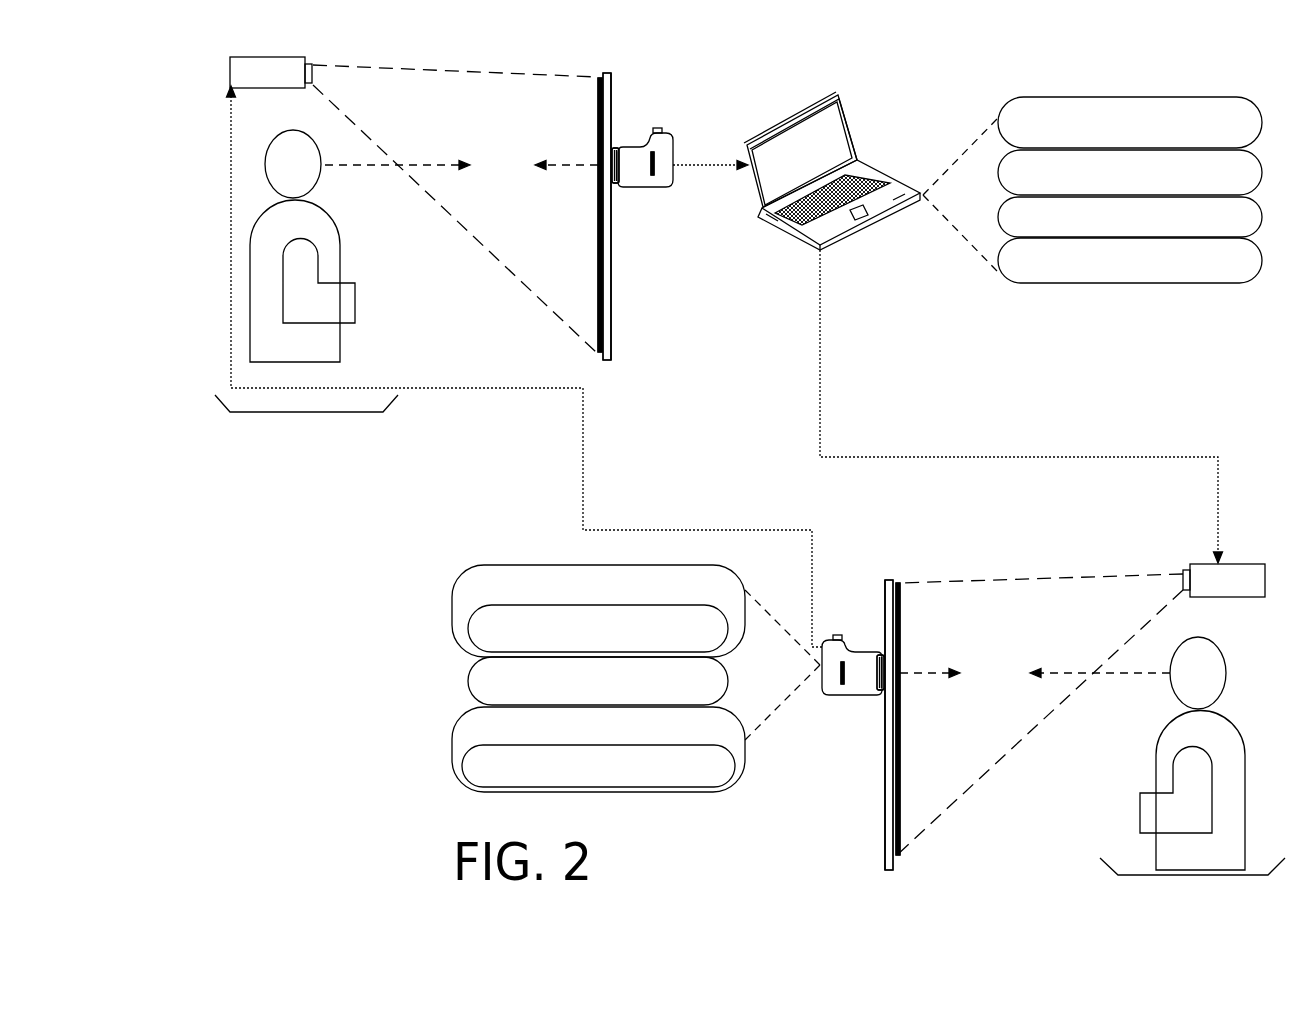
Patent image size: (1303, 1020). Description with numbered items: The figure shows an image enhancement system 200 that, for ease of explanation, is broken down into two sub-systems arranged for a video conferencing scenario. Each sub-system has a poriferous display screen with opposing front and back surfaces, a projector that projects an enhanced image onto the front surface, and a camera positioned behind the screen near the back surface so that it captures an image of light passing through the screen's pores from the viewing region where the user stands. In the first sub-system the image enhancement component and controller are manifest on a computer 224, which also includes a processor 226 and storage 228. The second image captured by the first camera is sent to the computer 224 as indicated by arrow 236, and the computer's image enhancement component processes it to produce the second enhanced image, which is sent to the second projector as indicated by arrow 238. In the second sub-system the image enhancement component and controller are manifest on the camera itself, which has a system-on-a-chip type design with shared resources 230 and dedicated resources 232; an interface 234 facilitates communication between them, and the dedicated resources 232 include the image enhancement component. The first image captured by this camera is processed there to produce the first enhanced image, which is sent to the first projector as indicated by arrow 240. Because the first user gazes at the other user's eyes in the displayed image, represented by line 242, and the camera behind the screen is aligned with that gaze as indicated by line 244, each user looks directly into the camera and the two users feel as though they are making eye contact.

The arrow 236 is at (698, 166).
The gaze line 242 is at (433, 165).
The camera alignment line 244 is at (568, 165).
The arrow 240 is at (514, 392).
The computer 224 is at (842, 95).
The arrow 238 is at (907, 457).
The processor 226 is at (1130, 217).
The storage 228 is at (1092, 239).
The shared resources 230 is at (636, 615).
The interface 234 is at (598, 681).
The dedicated resources 232 is at (636, 728).
The image enhancement system 200 is at (625, 36).